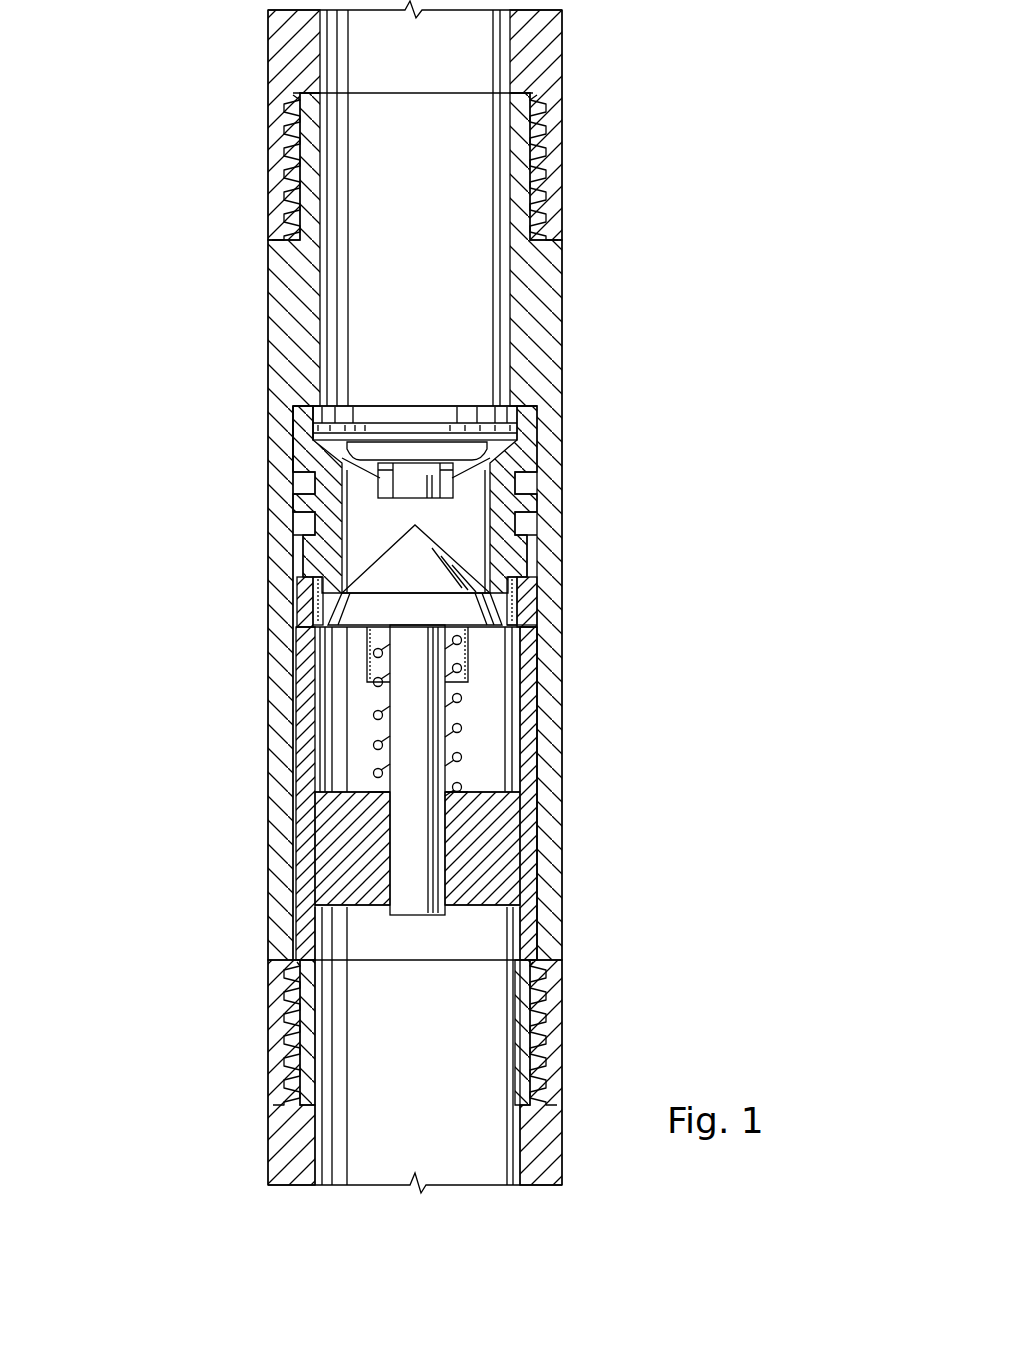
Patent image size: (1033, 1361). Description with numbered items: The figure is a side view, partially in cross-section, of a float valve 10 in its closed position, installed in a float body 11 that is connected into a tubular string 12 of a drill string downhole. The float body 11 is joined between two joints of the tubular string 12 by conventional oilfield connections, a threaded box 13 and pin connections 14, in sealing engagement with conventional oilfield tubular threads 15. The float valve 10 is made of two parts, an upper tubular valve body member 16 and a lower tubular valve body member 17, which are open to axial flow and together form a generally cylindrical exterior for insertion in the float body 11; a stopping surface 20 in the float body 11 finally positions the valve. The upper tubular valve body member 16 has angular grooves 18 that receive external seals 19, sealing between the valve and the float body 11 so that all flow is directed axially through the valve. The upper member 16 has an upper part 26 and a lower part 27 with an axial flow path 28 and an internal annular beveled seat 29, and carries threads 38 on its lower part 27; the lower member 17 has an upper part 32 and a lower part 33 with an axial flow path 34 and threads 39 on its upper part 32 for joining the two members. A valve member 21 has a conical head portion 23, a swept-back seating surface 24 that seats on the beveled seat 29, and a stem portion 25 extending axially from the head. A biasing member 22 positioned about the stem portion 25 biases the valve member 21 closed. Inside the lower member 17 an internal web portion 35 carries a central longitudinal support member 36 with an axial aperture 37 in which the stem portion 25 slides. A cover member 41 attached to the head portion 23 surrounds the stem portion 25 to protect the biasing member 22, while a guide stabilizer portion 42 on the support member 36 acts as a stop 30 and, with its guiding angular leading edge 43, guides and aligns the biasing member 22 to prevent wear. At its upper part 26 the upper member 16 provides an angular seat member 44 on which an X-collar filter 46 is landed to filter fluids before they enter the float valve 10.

The float valve 10 is at (291, 748).
The float body 11 is at (587, 290).
The tubular string 12 is at (562, 52).
The threaded box 13 is at (532, 998).
The pin connections 14 is at (545, 180).
The oilfield tubular threads 15 is at (543, 147).
The upper tubular valve body member 16 is at (530, 570).
The lower tubular valve body member 17 is at (530, 670).
The angular grooves 18 is at (303, 528).
The external seals 19 is at (520, 515).
The stopping surface 20 is at (297, 420).
The valve member 21 is at (374, 700).
The biasing member 22 is at (458, 727).
The conical head portion 23 is at (343, 580).
The seating surface 24 is at (317, 623).
The stem portion 25 is at (373, 730).
The upper part 26 is at (530, 433).
The lower part 27 is at (527, 602).
The axial flow path 28 is at (470, 529).
The internal annular beveled seat 29 is at (512, 617).
The stop 30 is at (540, 772).
The upper part 32 is at (295, 653).
The lower part 33 is at (295, 890).
The axial flow path 34 is at (500, 712).
The internal web portion 35 is at (330, 848).
The central longitudinal support member 36 is at (447, 847).
The axial aperture 37 is at (430, 872).
The threads 38 is at (533, 582).
The threads 39 is at (322, 603).
The cover member 41 is at (465, 662).
The guide stabilizer portion 42 is at (470, 787).
The guiding angular leading edge 43 is at (463, 747).
The angular seat member 44 is at (540, 404).
The X-collar filter 46 is at (297, 468).